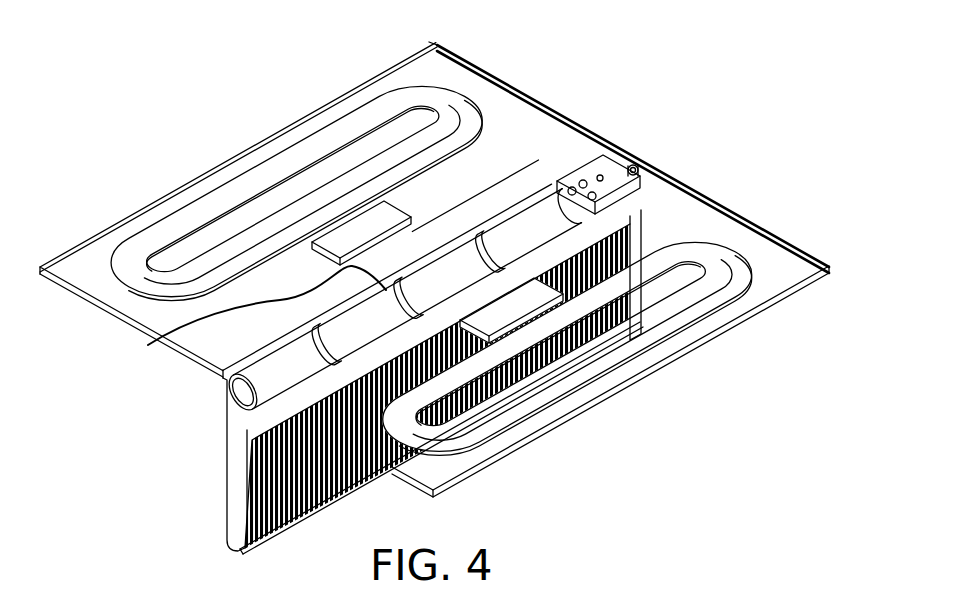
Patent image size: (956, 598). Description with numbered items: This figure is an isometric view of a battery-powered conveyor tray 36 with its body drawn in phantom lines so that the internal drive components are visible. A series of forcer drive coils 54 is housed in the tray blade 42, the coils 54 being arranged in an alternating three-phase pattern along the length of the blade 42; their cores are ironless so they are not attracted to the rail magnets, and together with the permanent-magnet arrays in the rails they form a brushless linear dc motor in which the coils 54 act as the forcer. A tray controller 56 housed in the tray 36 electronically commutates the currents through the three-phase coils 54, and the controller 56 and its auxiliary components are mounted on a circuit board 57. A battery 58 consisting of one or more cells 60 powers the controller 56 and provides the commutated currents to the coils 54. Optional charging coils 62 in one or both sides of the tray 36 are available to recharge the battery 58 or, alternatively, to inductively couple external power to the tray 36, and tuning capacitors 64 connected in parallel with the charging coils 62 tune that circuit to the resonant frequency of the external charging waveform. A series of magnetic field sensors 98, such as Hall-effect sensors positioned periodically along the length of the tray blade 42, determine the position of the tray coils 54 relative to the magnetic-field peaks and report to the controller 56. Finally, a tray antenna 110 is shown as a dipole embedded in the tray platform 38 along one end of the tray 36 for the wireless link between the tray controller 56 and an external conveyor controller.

The tray 36 is at (138, 206).
The tray platform 38 is at (791, 291).
The tray blade 42 is at (233, 517).
The forcer drive coils 54 is at (293, 510).
The tray controller 56 is at (636, 161).
The circuit board 57 is at (586, 152).
The battery 58 is at (148, 345).
The cells 60 is at (522, 214).
The charging coils 62 is at (263, 174).
The tuning capacitors 64 is at (366, 216).
The magnetic field sensors 98 is at (350, 487).
The tray antenna 110 is at (457, 57).